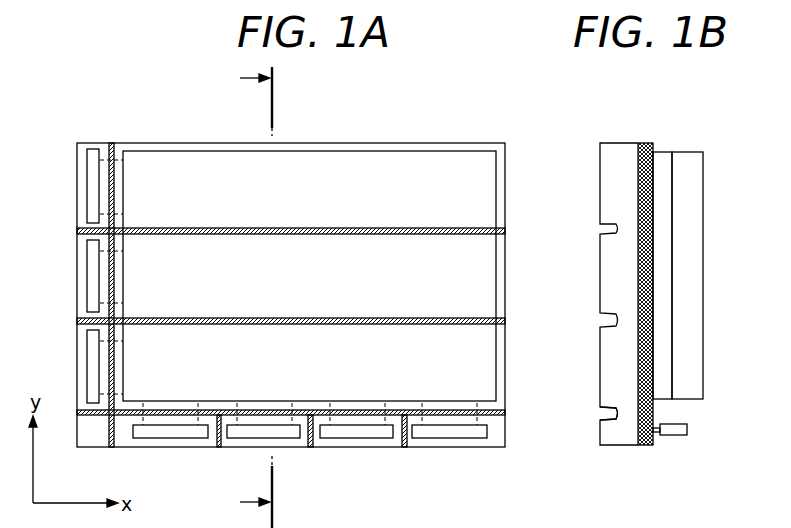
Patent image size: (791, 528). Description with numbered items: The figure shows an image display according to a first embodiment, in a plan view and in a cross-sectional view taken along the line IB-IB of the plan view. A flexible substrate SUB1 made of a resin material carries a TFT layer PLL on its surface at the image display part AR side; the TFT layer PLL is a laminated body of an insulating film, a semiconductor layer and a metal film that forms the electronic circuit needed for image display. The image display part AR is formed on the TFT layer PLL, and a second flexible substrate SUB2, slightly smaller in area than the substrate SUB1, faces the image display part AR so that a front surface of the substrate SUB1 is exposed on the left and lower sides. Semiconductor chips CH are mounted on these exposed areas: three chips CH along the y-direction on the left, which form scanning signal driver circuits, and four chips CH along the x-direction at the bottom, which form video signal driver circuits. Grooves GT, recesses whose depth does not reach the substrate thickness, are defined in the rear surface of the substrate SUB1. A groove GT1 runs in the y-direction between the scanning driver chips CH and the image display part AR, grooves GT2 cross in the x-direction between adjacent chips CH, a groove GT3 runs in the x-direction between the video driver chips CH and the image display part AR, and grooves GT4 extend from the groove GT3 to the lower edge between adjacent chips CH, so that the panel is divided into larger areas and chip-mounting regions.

In FIG. 1A, the flexible substrate SUB1 is at (174, 143).
In FIG. 1B, the flexible substrate SUB1 is at (605, 188).
In FIG. 1B, the flexible substrate SUB2 is at (690, 153).
In FIG. 1A, the image display part AR is at (309, 276).
In FIG. 1B, the image display part AR is at (663, 153).
In FIG. 1A, the groove GT is at (114, 434).
In FIG. 1B, the groove GT is at (610, 418).
In FIG. 1A, the groove GT1 is at (111, 143).
In FIG. 1A, the groove GT2 is at (80, 320).
In FIG. 1A, the groove GT3 is at (486, 406).
In FIG. 1A, the groove GT4 is at (307, 425).
In FIG. 1A, the semiconductor chip CH is at (87, 190).
In FIG. 1B, the semiconductor chip CH is at (677, 436).
In FIG. 1B, the TFT layer PLL is at (640, 143).
In FIG. 1A, the line IB- IB is at (242, 297).